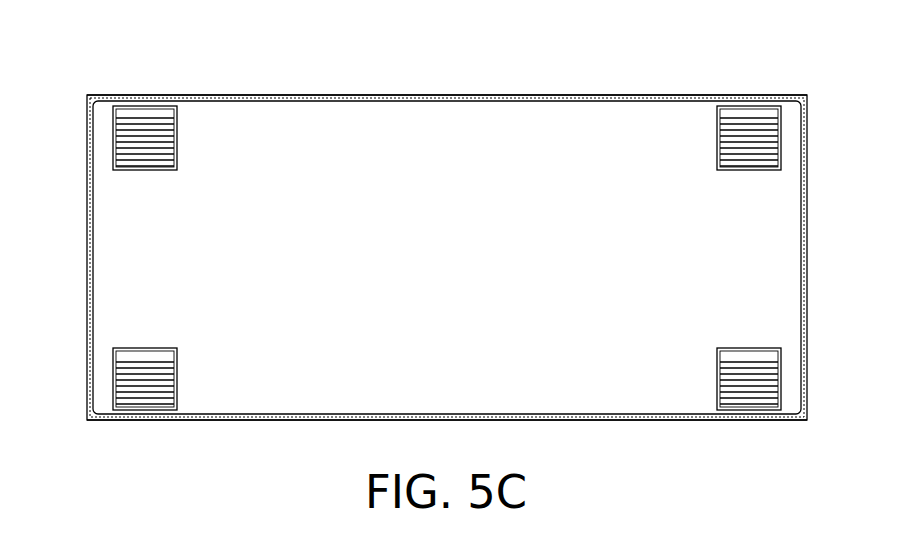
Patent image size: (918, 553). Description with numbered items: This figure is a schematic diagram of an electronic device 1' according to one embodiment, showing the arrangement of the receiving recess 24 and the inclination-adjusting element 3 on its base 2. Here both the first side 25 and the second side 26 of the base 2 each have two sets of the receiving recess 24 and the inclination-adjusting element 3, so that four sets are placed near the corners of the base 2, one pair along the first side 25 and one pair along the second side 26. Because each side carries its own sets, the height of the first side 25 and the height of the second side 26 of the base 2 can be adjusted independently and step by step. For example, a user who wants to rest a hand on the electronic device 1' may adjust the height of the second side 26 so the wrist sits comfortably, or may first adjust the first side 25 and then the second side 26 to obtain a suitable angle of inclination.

The electronic device 1' is at (446, 245).
The base 2 is at (107, 267).
The inclination-adjusting element 3 is at (186, 143).
The receiving recess 24 is at (152, 113).
The first side 25 is at (448, 97).
The second side 26 is at (655, 421).